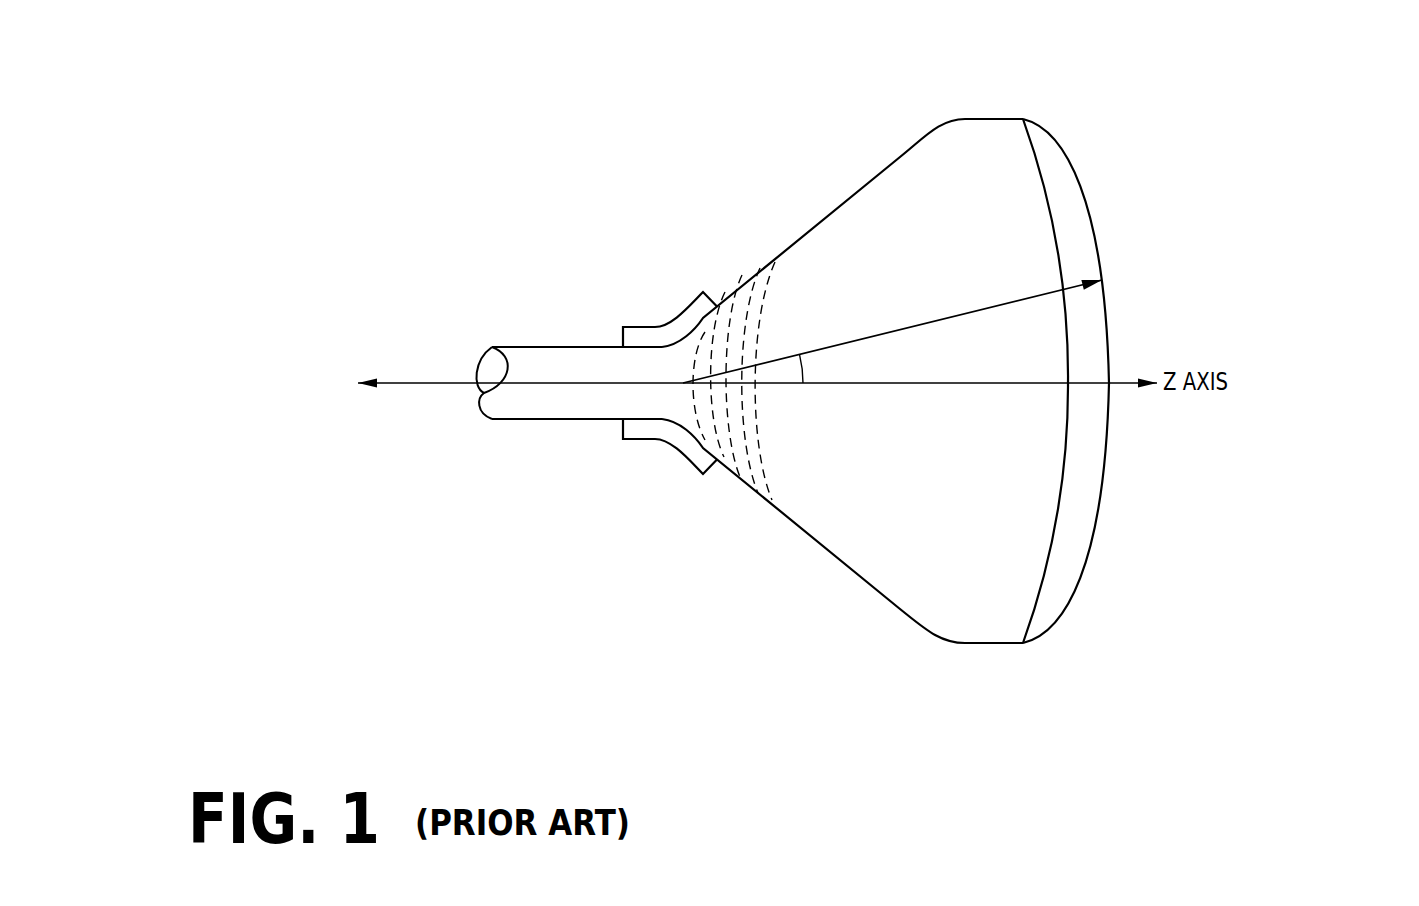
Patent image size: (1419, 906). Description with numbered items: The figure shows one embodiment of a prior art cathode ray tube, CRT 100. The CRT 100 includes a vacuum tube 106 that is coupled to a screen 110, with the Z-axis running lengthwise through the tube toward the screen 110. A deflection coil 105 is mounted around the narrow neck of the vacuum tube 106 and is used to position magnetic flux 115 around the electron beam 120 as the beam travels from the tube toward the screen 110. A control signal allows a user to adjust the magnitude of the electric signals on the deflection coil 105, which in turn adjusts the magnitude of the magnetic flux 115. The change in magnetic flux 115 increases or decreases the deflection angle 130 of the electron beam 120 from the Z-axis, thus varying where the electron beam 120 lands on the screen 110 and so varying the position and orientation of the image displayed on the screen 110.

The CRT 100 is at (523, 118).
The deflection coil 105 is at (676, 458).
The vacuum tube 106 is at (524, 403).
The screen 110 is at (1060, 152).
The magnetic flux 115 is at (756, 297).
The electron beam 120 is at (1103, 275).
The deflection angle 130 is at (832, 367).